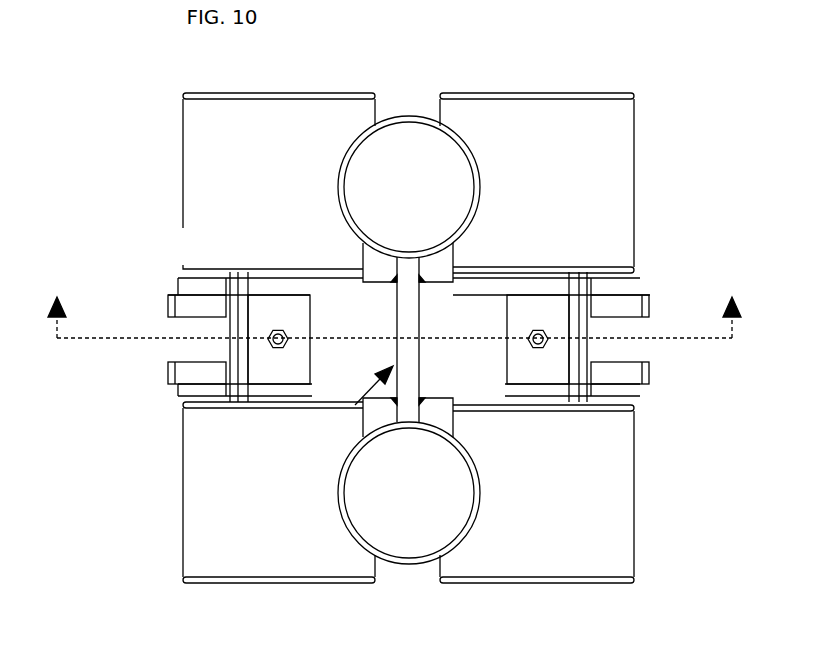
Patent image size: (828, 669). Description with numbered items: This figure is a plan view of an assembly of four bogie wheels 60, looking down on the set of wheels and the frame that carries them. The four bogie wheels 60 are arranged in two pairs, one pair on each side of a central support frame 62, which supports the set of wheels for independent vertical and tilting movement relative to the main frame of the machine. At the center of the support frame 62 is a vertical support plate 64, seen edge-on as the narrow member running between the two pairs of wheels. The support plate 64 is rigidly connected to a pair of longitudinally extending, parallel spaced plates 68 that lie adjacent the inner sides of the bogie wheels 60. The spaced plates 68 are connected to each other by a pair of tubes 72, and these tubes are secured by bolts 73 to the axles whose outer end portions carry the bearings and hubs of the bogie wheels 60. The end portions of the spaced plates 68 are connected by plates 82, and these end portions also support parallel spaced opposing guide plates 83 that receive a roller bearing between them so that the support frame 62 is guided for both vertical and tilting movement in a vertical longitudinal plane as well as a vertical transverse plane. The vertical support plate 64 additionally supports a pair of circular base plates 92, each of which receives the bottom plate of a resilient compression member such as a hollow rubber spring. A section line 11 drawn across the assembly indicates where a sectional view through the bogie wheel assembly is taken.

The section line 11- 11 is at (393, 301).
The bogie wheel 60 is at (210, 138).
The support frame 62 is at (360, 404).
The vertical support plate 64 is at (411, 373).
The spaced plate 68 is at (286, 290).
The tube 72 is at (283, 362).
The bolt 73 is at (284, 334).
The plate 82 is at (238, 317).
The guide plate 83 is at (168, 300).
The circular base plate 92 is at (413, 165).